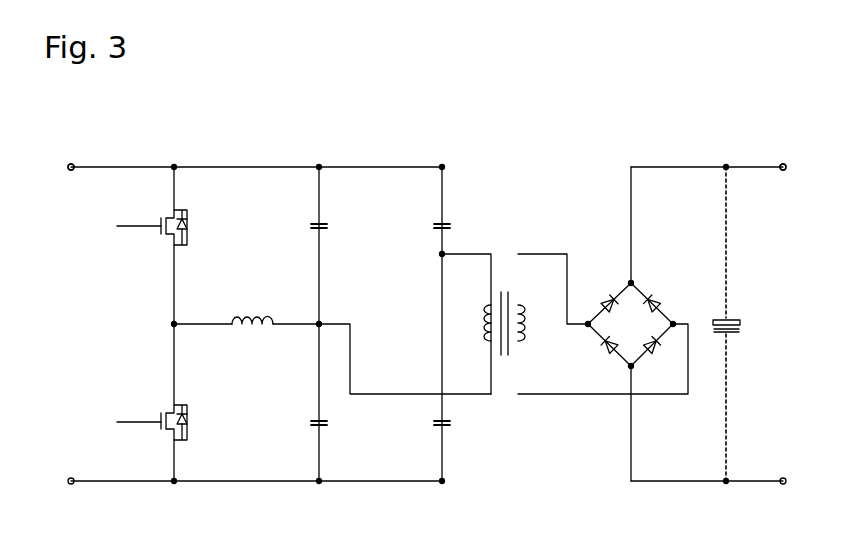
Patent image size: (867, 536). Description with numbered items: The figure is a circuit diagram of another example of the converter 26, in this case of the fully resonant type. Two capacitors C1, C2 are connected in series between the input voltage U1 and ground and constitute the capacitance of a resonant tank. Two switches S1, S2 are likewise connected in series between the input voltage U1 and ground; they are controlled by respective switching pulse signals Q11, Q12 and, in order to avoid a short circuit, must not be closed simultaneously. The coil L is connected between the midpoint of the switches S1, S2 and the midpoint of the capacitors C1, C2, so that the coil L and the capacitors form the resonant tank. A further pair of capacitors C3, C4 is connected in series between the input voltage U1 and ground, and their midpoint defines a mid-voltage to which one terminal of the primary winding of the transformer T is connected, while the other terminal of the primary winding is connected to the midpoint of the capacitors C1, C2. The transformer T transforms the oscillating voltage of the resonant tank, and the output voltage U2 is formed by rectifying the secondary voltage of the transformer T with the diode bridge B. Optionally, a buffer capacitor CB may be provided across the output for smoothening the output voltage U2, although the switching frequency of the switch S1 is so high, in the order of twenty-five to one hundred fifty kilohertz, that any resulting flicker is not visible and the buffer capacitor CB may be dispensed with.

The converter 26 is at (420, 125).
The switch S1 is at (201, 227).
The switch S2 is at (201, 422).
The switching pulse signal Q11 is at (112, 227).
The switching pulse signal Q12 is at (112, 423).
The coil L is at (252, 299).
The capacitor C1 is at (340, 421).
The capacitor C2 is at (340, 224).
The capacitor C3 is at (464, 224).
The capacitor C4 is at (464, 421).
The transformer T is at (491, 323).
The diode bridge B is at (631, 325).
The buffer capacitor CB is at (750, 324).
The input voltage U1 is at (91, 145).
The output voltage U2 is at (763, 146).